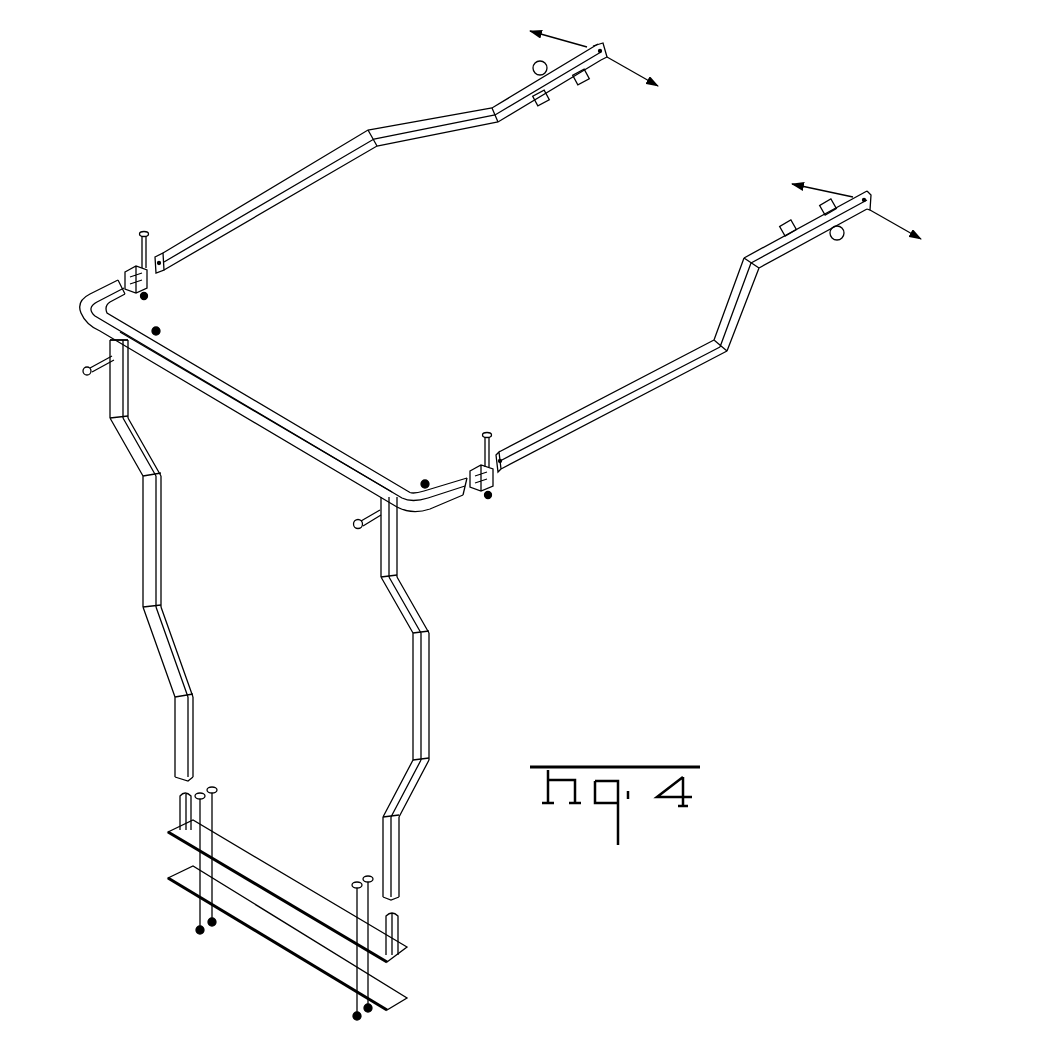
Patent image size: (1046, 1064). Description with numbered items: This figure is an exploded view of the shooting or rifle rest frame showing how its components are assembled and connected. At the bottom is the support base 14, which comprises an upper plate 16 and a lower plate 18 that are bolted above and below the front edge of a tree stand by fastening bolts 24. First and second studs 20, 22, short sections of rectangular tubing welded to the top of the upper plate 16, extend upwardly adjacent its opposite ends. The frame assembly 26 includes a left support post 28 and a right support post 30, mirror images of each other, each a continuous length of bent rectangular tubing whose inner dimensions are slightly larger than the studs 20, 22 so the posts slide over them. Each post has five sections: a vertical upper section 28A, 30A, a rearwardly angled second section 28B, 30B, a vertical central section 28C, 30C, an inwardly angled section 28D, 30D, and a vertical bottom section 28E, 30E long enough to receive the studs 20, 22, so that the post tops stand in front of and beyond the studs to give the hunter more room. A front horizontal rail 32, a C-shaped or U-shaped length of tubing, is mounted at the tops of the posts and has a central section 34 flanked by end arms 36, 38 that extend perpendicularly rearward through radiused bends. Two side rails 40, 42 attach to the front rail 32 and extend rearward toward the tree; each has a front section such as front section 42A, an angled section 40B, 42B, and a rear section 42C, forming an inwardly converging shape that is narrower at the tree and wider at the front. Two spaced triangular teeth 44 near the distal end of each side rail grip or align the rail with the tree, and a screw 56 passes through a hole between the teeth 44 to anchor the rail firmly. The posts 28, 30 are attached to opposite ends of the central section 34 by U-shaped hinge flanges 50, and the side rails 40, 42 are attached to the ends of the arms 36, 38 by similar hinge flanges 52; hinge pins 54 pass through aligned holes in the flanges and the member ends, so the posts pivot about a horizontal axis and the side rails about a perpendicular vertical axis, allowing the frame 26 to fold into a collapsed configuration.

The support base 14 is at (304, 897).
The upper plate 16 is at (247, 858).
The lower plate 18 is at (257, 913).
The first stud 20 is at (177, 797).
The second stud 22 is at (403, 923).
The fastening bolts 24 is at (205, 798).
The frame assembly 26 is at (248, 114).
The left support post 28 is at (163, 560).
The upper section 28A is at (112, 387).
The second section 28B is at (139, 448).
The central section 28C is at (160, 549).
The inwardly angled section 28D is at (180, 653).
The bottom section 28E is at (194, 733).
The right support post 30 is at (455, 698).
The upper section 30A is at (399, 545).
The second section 30B is at (418, 608).
The central section 30C is at (428, 700).
The inwardly angled section 30D is at (412, 796).
The bottom section 30E is at (399, 862).
The front horizontal rail 32 is at (309, 398).
The central section 34 is at (247, 393).
The end arm 36 is at (110, 285).
The end arm 38 is at (462, 497).
The side rail 40 is at (381, 158).
The angled section 40B is at (272, 191).
The side rail 42 is at (688, 331).
The front section 42A is at (594, 418).
The angled section 42B is at (743, 303).
The rear section 42C is at (787, 252).
The triangular projections or teeth 44 is at (586, 83).
The hinge flanges 50 is at (130, 357).
The hinge flanges 52 is at (150, 296).
The hinge pin 54 is at (143, 229).
The fastener or screw 56 is at (533, 68).